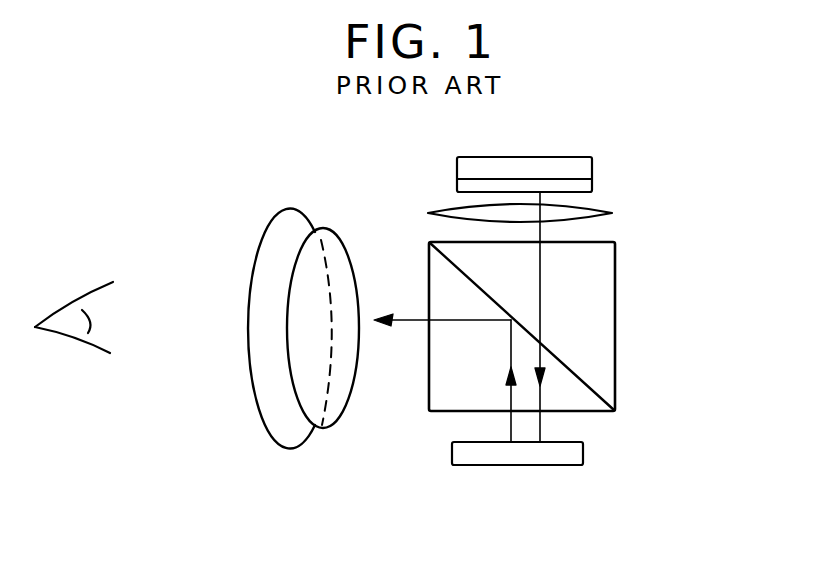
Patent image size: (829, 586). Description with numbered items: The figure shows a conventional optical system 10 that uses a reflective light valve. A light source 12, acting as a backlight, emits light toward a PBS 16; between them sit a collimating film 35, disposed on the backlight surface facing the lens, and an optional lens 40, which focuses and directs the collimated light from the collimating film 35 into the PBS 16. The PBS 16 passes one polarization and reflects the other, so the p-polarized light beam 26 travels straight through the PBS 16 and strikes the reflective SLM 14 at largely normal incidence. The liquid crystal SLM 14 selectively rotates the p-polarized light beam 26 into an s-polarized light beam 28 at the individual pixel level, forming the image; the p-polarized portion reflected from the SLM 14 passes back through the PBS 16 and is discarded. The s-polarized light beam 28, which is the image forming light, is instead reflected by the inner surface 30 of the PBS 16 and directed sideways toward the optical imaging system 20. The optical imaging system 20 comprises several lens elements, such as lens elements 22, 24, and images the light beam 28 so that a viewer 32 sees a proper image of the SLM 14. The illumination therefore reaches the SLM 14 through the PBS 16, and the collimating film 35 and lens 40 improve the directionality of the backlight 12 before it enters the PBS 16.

The optical system 10 is at (697, 449).
The light source 12 is at (571, 176).
The reflective SLM 14 is at (583, 456).
The PBS 16 is at (620, 313).
The optical imaging system 20 is at (290, 332).
The lens element 22 is at (342, 240).
The lens element 24 is at (268, 225).
The p-polarized light beam 26 is at (540, 423).
The s-polarized light beam 28 is at (462, 322).
The inner surface 30 is at (588, 385).
The viewer 32 is at (102, 348).
The collimating film 35 is at (593, 187).
The lens 40 is at (605, 215).